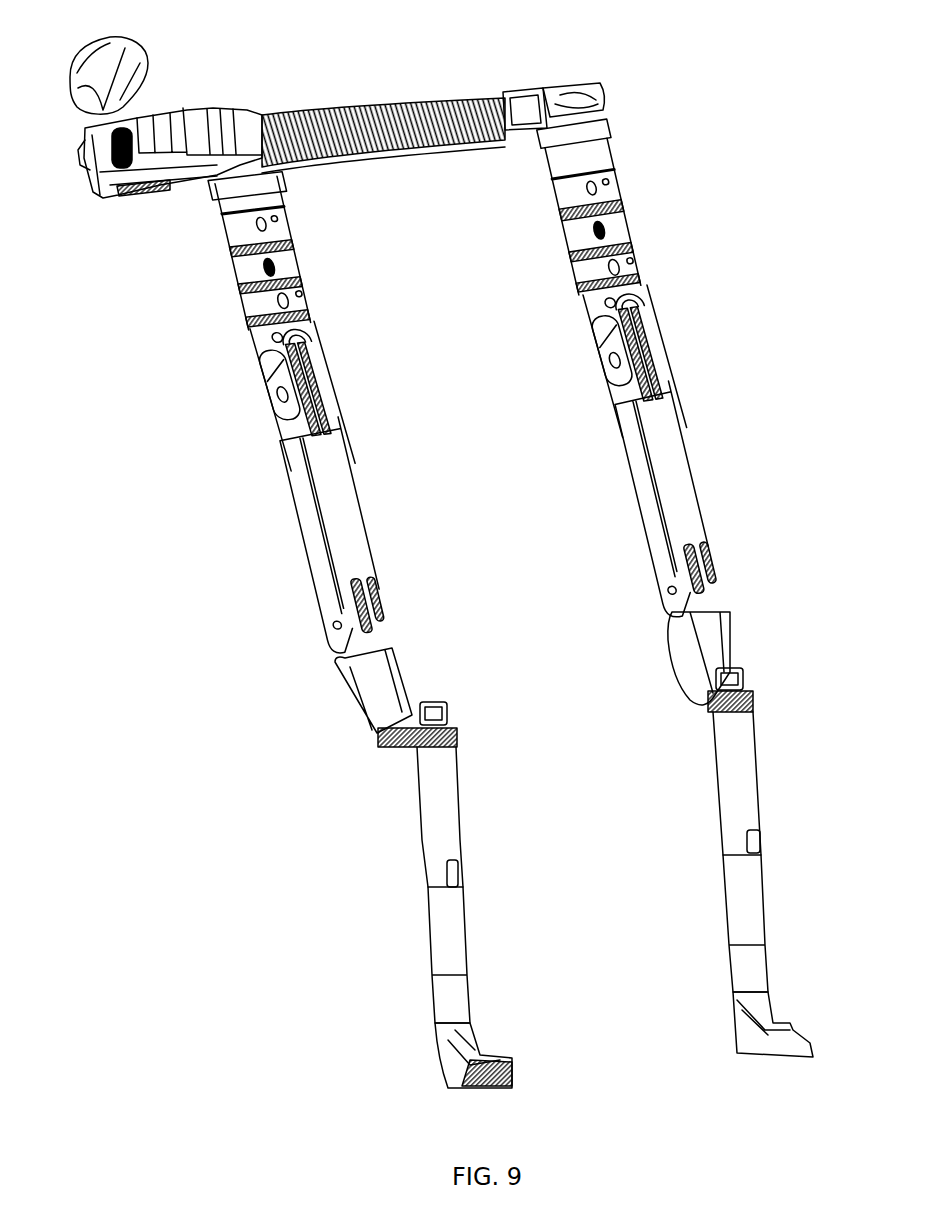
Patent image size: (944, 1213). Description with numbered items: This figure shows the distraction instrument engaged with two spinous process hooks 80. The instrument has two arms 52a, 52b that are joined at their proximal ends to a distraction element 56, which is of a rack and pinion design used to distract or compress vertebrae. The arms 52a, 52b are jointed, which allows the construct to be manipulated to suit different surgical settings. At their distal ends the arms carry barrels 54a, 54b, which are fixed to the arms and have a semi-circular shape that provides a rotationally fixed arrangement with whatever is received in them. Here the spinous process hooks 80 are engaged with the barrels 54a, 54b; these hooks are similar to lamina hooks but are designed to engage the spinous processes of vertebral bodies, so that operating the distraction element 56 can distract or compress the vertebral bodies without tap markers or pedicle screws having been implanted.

The distraction element 56 is at (357, 110).
The arm 52a is at (668, 438).
The arm 52b is at (298, 488).
The barrel 54a is at (740, 782).
The barrel 54b is at (430, 818).
The spinous process hook 80 is at (443, 946).